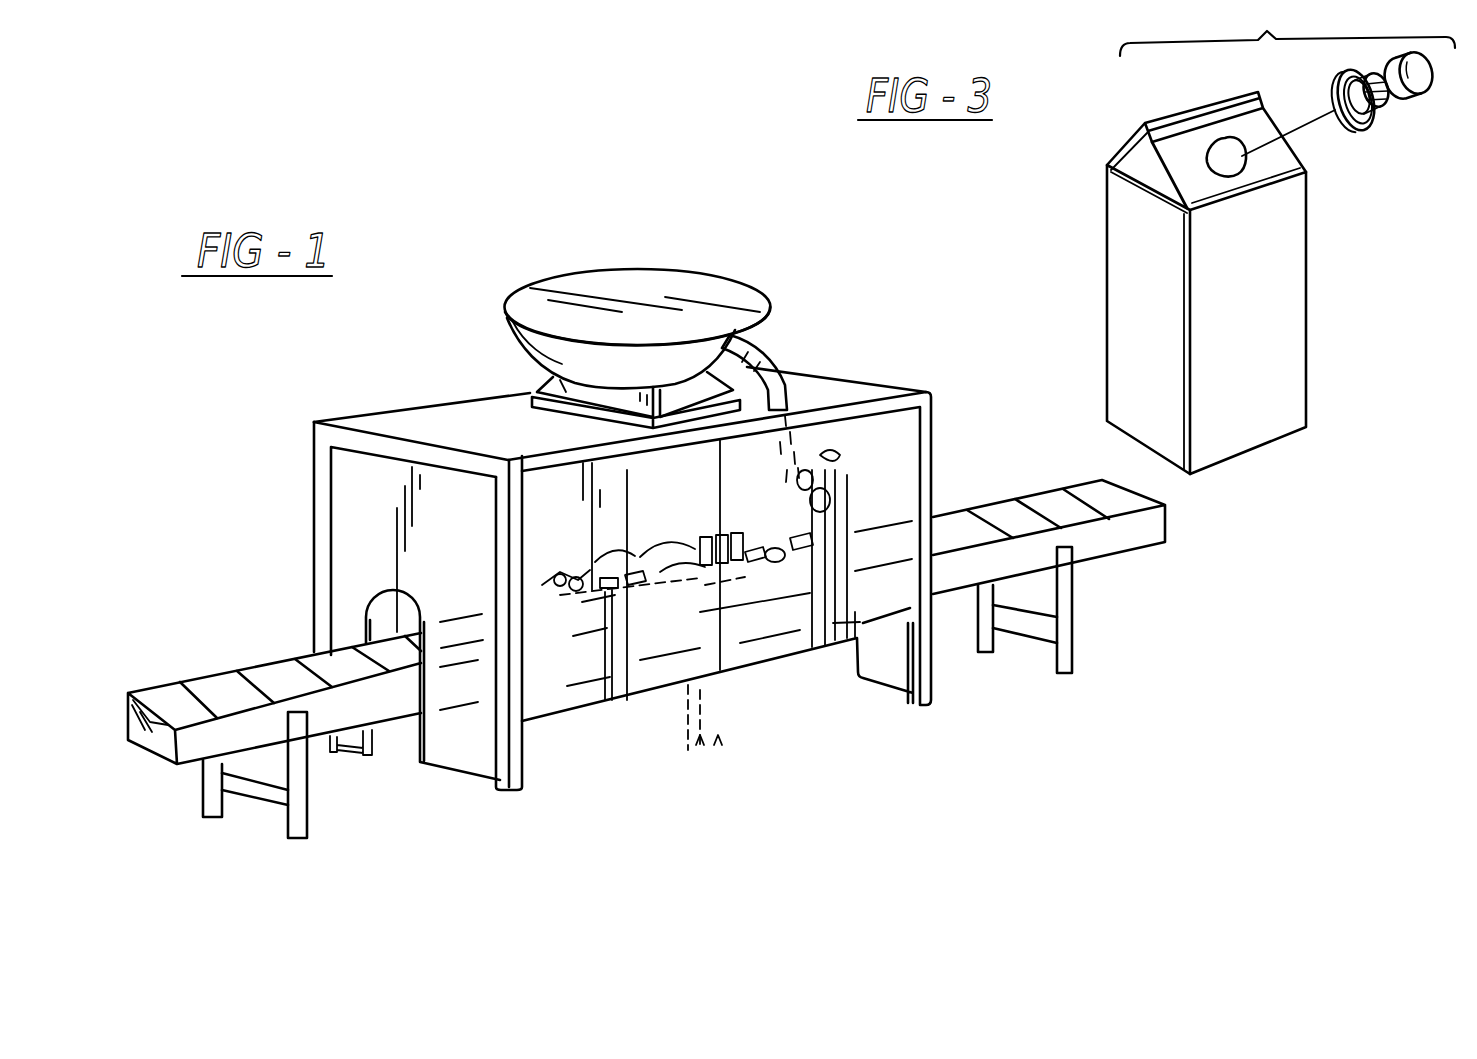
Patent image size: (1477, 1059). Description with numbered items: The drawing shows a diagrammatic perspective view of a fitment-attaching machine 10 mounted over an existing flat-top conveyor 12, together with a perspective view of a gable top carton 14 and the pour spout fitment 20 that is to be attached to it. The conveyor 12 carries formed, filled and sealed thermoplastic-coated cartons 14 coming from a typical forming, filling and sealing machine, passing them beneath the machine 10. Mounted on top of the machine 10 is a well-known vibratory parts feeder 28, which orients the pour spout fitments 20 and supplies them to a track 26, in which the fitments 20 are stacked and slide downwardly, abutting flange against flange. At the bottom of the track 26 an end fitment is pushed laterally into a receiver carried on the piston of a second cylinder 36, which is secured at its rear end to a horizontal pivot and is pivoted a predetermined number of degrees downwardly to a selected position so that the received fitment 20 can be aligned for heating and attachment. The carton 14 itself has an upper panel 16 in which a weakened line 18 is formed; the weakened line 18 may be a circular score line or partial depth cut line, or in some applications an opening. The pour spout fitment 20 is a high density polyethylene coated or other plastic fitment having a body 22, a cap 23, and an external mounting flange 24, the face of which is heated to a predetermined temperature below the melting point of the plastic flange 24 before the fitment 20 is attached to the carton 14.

In FIG. 1, the machine 10 is at (466, 326).
In FIG. 1, the flat-top conveyor 12 is at (242, 664).
In FIG. 1, the track 26 is at (783, 380).
In FIG. 1, the vibratory parts feeder 28 is at (617, 290).
In FIG. 1, the second cylinder 36 is at (820, 477).
In FIG. 3, the carton 14 is at (1146, 110).
In FIG. 3, the upper panel 16 is at (1212, 189).
In FIG. 3, the weakened line 18 is at (1178, 203).
In FIG. 3, the pour spout fitment 20 is at (1288, 135).
In FIG. 3, the body 22 is at (1372, 110).
In FIG. 3, the cap 23 is at (1417, 92).
In FIG. 3, the external mounting flange 24 is at (1337, 126).